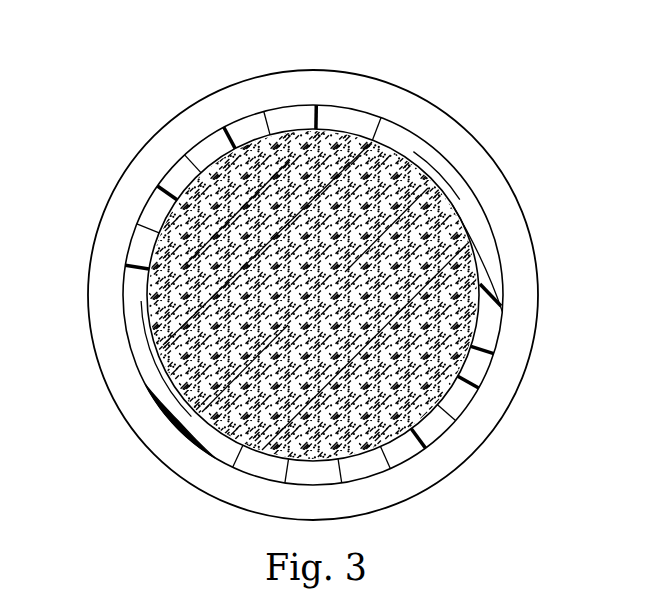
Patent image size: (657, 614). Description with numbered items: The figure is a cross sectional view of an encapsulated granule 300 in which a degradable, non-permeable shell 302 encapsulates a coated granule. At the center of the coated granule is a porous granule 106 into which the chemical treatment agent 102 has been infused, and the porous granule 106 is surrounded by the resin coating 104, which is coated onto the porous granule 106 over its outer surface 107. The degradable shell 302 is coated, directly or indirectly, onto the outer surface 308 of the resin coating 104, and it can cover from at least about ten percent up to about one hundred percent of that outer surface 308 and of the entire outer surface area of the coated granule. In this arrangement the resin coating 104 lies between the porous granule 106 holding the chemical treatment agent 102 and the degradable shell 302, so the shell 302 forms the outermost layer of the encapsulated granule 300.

The encapsulated granule 300 is at (455, 74).
The degradable, non-permeable shell 302 is at (347, 88).
The resin coating 104 is at (246, 118).
The porous granule 106 is at (338, 313).
The outer surface of the granule 107 is at (473, 322).
The chemical treatment agent 102 is at (182, 362).
The outer surface of the resin coating 308 is at (184, 434).